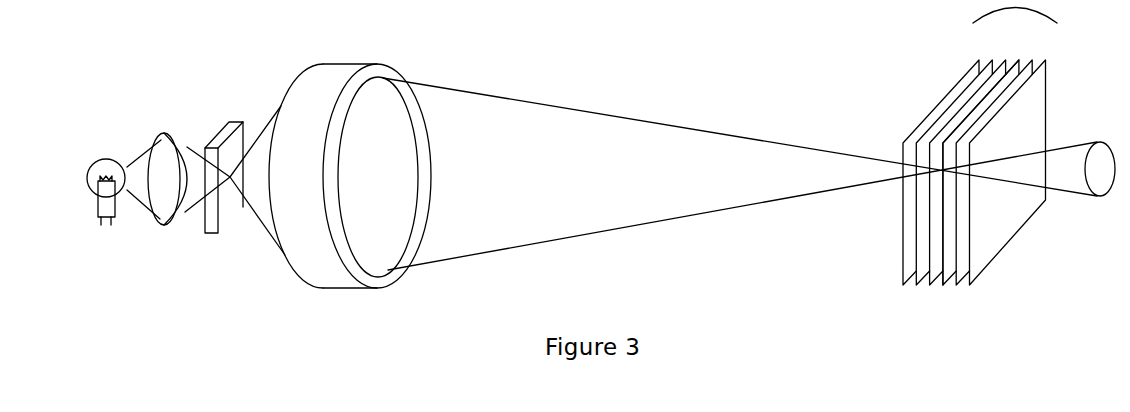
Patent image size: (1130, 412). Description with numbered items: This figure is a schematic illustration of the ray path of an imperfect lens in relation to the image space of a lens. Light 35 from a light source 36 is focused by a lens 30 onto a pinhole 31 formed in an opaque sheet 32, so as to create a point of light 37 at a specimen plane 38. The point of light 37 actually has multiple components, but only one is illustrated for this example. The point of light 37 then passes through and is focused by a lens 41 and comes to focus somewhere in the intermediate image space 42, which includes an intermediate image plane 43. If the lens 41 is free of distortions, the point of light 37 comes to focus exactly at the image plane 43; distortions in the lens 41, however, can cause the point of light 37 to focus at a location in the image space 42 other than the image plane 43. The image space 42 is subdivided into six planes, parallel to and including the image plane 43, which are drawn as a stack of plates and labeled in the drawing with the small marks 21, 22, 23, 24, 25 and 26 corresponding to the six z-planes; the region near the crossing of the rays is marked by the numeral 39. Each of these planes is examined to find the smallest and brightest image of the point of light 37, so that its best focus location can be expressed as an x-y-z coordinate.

The first plate 21 is at (942, 167).
The second plate 22 is at (955, 167).
The third plate 23 is at (969, 167).
The fourth plate 24 is at (983, 167).
The fifth plate 25 is at (996, 167).
The sixth plate 26 is at (1009, 167).
The lens 30 is at (161, 132).
The pinhole 31 is at (261, 150).
The opaque sheet 32 is at (213, 233).
The light 35 is at (138, 157).
The light source 36 is at (95, 171).
The point of light 37 is at (243, 207).
The specimen plane 38 is at (243, 122).
The focal point 39 is at (942, 167).
The lens 41 is at (338, 70).
The intermediate image space 42 is at (1015, 11).
The intermediate image plane 43 is at (951, 283).